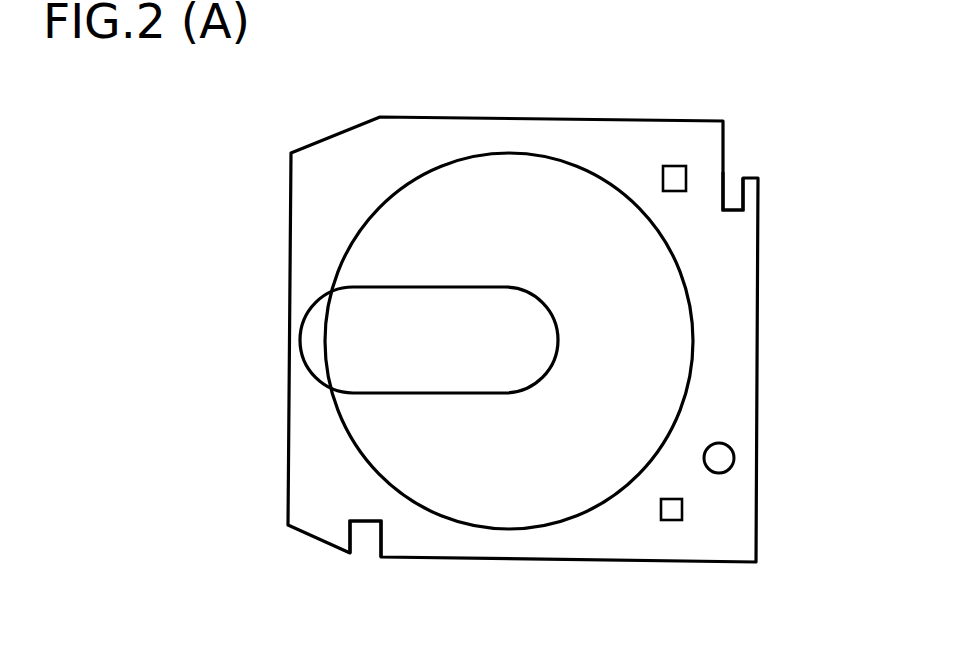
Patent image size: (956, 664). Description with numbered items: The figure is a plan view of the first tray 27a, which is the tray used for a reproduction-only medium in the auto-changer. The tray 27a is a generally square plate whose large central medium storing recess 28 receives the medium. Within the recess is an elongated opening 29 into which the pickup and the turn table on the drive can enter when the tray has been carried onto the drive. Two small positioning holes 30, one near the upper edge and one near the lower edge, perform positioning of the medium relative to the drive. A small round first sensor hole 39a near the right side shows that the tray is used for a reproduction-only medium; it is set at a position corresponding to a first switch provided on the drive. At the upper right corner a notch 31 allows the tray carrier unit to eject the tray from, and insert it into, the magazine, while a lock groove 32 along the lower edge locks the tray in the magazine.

The first tray 27a is at (387, 137).
The medium storing recess 28 is at (515, 175).
The opening 29 is at (343, 322).
The positioning holes 30 is at (674, 173).
The notch 31 is at (730, 190).
The lock groove 32 is at (363, 548).
The first sensor hole 39a is at (722, 452).